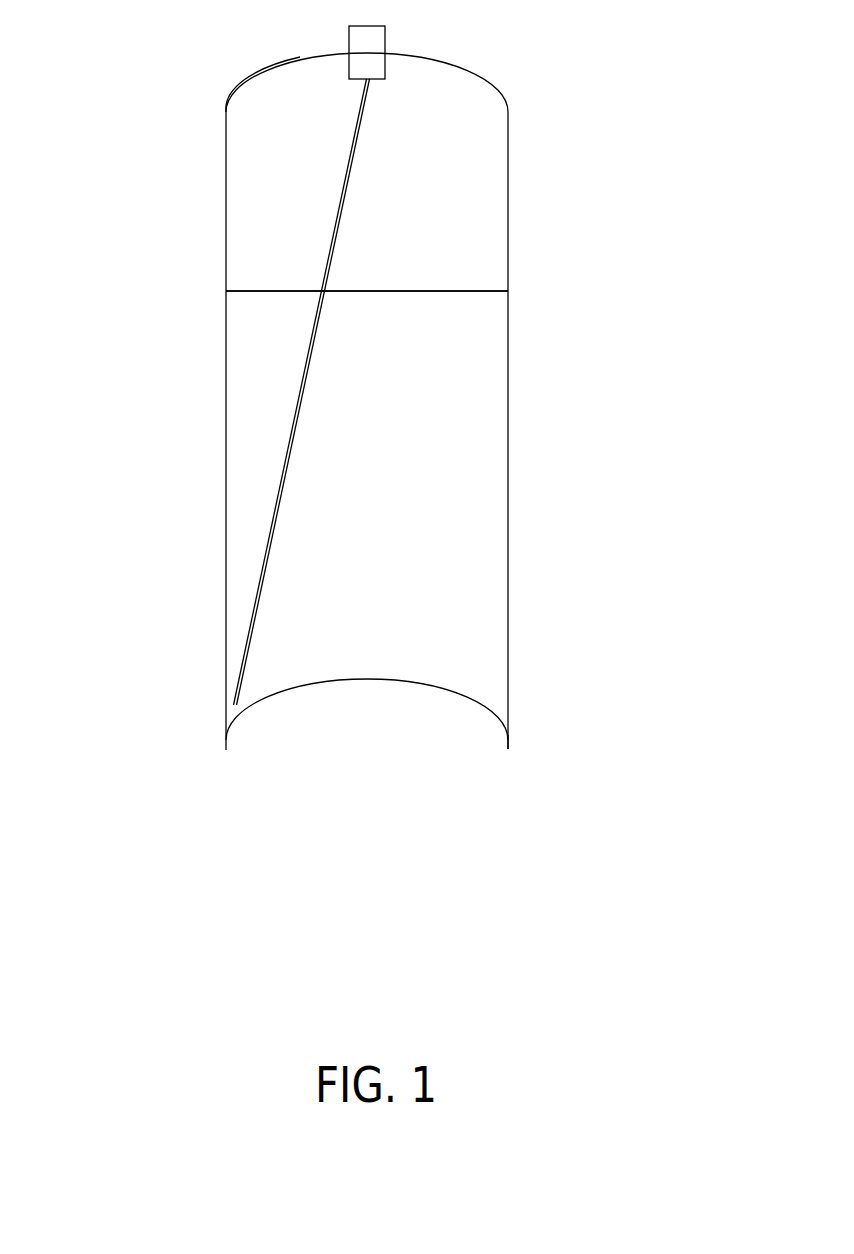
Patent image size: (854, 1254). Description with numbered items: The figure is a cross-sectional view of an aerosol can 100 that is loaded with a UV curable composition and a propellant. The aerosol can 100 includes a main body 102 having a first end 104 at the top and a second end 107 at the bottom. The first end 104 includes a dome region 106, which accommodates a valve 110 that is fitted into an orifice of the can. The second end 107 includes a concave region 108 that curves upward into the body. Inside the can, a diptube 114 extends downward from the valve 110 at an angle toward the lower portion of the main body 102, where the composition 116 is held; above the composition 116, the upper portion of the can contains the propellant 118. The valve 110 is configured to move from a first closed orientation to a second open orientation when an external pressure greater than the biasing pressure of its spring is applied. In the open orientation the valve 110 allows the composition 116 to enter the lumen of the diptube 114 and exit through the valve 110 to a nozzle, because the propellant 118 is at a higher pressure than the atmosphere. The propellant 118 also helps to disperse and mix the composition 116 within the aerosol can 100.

The aerosol can 100 is at (757, 844).
The main body 102 is at (508, 504).
The first end 104 is at (430, 56).
The dome region 106 is at (263, 68).
The second end 107 is at (508, 749).
The concave region 108 is at (407, 682).
The valve 110 is at (349, 40).
The diptube 114 is at (283, 470).
The composition 116 is at (253, 493).
The propellant 118 is at (262, 194).